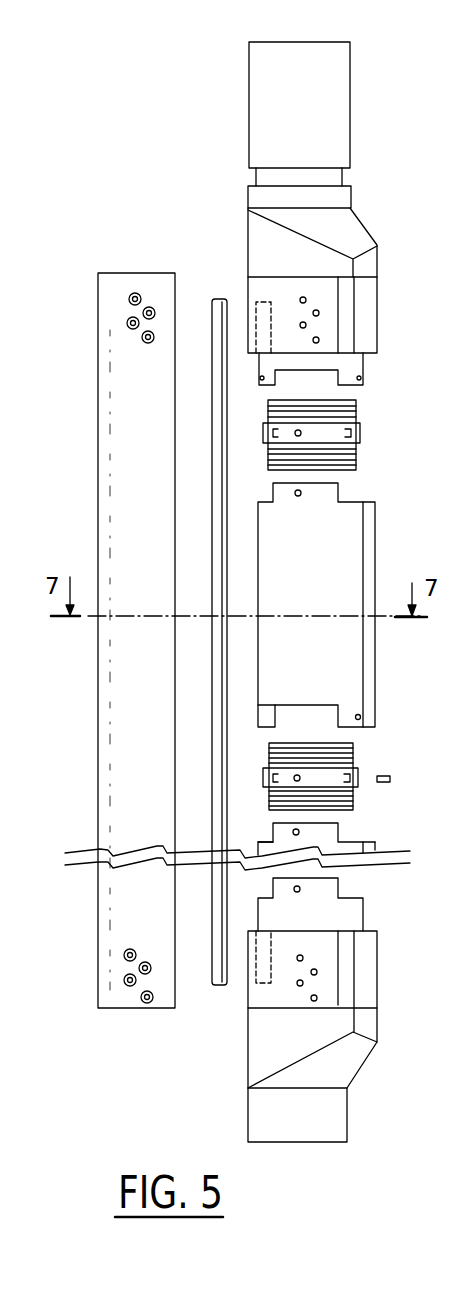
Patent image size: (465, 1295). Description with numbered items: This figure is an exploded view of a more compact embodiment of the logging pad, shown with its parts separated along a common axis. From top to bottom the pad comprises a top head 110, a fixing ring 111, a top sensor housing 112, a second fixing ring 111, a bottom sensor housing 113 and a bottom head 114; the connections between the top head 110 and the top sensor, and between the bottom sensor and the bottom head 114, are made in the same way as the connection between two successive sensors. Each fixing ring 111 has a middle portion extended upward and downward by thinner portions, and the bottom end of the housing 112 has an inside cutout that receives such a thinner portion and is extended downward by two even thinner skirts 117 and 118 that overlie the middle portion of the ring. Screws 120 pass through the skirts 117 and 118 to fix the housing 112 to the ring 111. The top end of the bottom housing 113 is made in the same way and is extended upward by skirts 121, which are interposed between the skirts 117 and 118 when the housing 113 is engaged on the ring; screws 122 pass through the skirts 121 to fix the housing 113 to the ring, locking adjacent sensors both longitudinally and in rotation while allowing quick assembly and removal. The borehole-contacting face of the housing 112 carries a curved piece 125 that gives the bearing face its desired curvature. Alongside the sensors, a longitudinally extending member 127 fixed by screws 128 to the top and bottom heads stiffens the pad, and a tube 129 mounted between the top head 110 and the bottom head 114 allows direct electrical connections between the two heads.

The top head 110 is at (328, 124).
The fixing ring 111 is at (330, 433).
The sensor housing 112 is at (335, 568).
The sensor housing 113 is at (348, 847).
The bottom head 114 is at (340, 1022).
The skirt 117 is at (261, 707).
The skirt 118 is at (347, 710).
The screw 120 is at (390, 779).
The skirt 121 is at (278, 835).
The screw 122 is at (297, 775).
The curved piece 125 is at (372, 520).
The longitudinally extending member 127 is at (125, 413).
The screw 128 is at (130, 302).
The tube 129 is at (222, 532).